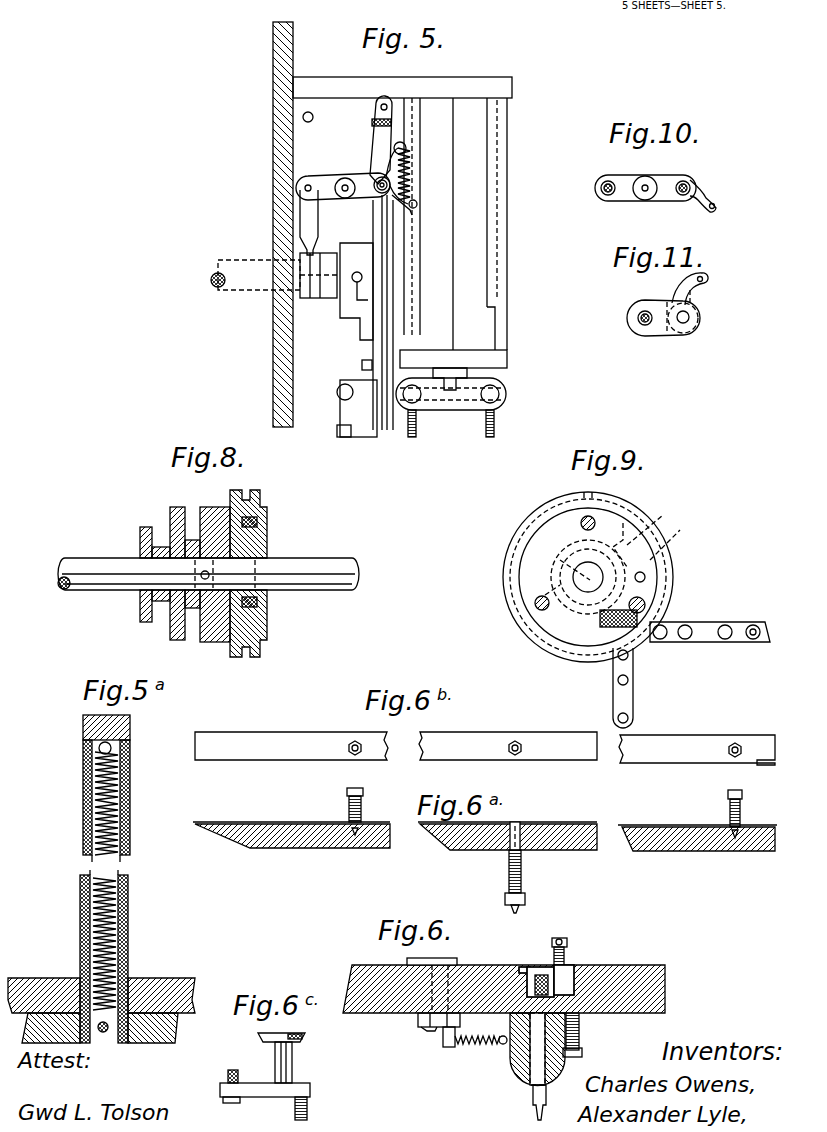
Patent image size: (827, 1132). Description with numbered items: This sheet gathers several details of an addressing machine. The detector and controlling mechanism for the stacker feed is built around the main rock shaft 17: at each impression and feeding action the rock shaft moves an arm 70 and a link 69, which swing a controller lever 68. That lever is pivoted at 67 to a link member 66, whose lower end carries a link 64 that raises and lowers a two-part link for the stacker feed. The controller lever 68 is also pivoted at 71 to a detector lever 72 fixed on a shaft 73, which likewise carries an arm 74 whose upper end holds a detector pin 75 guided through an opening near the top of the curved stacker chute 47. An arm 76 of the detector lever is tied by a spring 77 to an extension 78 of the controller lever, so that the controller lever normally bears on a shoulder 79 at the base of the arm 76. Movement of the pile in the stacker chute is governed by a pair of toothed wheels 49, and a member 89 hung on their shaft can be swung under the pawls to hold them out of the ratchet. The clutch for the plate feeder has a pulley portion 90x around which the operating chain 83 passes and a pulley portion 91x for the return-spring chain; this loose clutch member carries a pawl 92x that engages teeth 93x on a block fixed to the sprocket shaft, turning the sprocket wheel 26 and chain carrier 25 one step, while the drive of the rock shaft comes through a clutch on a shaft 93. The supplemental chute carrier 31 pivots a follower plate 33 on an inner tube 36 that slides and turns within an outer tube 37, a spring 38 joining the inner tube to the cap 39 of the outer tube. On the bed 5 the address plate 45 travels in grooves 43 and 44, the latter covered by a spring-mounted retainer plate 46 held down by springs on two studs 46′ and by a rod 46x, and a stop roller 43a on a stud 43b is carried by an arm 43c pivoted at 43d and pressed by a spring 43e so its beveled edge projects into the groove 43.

In FIG. 6A, the bed 5 is at (473, 840).
In FIG. 6, the bed 5 is at (362, 987).
In FIG. 5, the rock shaft 17 is at (249, 278).
In FIG. 6, the chain carrier 25 is at (500, 1045).
In FIG. 6, the sprocket wheel 26 is at (533, 1093).
In FIG. 5A, the carrier 31 is at (170, 980).
In FIG. 5A, the follower plate 33 is at (173, 1027).
In FIG. 5A, the inner tube 36 is at (82, 935).
In FIG. 5A, the outer tube 37 is at (128, 912).
In FIG. 5A, the spring 38 is at (97, 777).
In FIG. 5A, the cap 39 is at (85, 738).
In FIG. 6, the groove 43 is at (418, 1017).
In FIG. 6, the roller 43a is at (400, 958).
In FIG. 6C, the roller 43a is at (298, 1038).
In FIG. 6C, the stud 43b is at (290, 1063).
In FIG. 6, the arm 43c is at (427, 1028).
In FIG. 6C, the arm 43c is at (267, 1087).
In FIG. 6, the pivot 43d is at (437, 1031).
In FIG. 6C, the pivot 43d is at (223, 1099).
In FIG. 6, the spring 43e is at (447, 1048).
In FIG. 6, the groove 44 is at (483, 1043).
In FIG. 6, the address plate 45 is at (505, 967).
In FIG. 6B, the retainer plate 46 is at (320, 752).
In FIG. 6A, the retainer plate 46 is at (635, 825).
In FIG. 6, the retainer plate 46 is at (538, 970).
In FIG. 6B, the stud 46′ is at (358, 754).
In FIG. 6A, the stud 46′ is at (740, 757).
In FIG. 6, the stud 46′ is at (567, 940).
In FIG. 6A, the rod 46x is at (522, 898).
In FIG. 6, the rod 46x is at (580, 1052).
In FIG. 5, the stacker chute 47 is at (477, 155).
In FIG. 5, the toothed wheel 49 is at (410, 437).
In FIG. 5, the link 64 is at (380, 263).
In FIG. 5, the link member 66 is at (383, 205).
In FIG. 5, the pivot 67 is at (374, 174).
In FIG. 5, the controller lever 68 is at (335, 170).
In FIG. 10, the controller lever 68 is at (632, 180).
In FIG. 5, the link 69 is at (310, 215).
In FIG. 5, the arm 70 is at (328, 287).
In FIG. 5, the pivot 71 is at (343, 192).
In FIG. 10, the pivot 71 is at (644, 198).
In FIG. 5, the detector lever 72 is at (385, 165).
In FIG. 11, the detector lever 72 is at (667, 332).
In FIG. 11, the shaft 73 is at (688, 323).
In FIG. 5, the arm 74 is at (377, 133).
In FIG. 5, the pin 75 is at (398, 103).
In FIG. 5, the arm 76 is at (406, 148).
In FIG. 11, the arm 76 is at (704, 276).
In FIG. 5, the spring 77 is at (405, 177).
In FIG. 5, the extension 78 is at (416, 206).
In FIG. 10, the extension 78 is at (707, 201).
In FIG. 5, the shoulder 79 is at (405, 195).
In FIG. 11, the shoulder 79 is at (700, 314).
In FIG. 9, the chain 83 is at (627, 690).
In FIG. 5, the member 89 is at (367, 437).
In FIG. 8, the pulley portion 90x is at (162, 608).
In FIG. 8, the pulley portion 91x is at (192, 625).
In FIG. 9, the pawl 92x is at (657, 560).
In FIG. 9, the shaft 93 is at (537, 637).
In FIG. 9, the teeth 93x is at (653, 523).